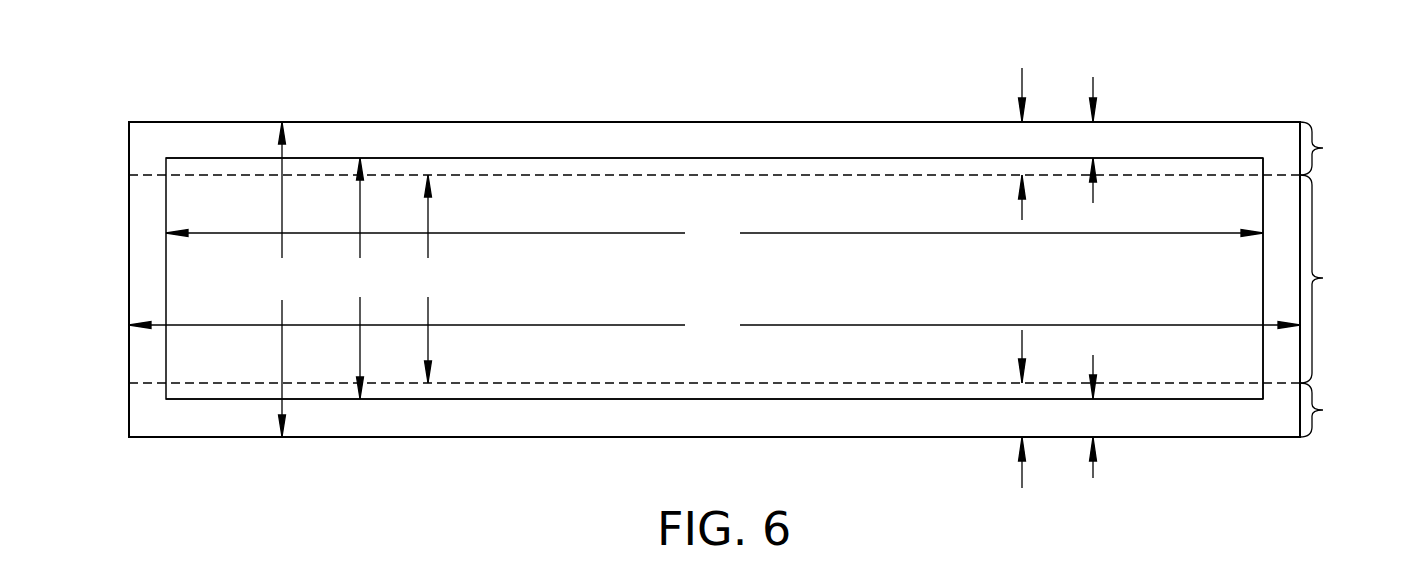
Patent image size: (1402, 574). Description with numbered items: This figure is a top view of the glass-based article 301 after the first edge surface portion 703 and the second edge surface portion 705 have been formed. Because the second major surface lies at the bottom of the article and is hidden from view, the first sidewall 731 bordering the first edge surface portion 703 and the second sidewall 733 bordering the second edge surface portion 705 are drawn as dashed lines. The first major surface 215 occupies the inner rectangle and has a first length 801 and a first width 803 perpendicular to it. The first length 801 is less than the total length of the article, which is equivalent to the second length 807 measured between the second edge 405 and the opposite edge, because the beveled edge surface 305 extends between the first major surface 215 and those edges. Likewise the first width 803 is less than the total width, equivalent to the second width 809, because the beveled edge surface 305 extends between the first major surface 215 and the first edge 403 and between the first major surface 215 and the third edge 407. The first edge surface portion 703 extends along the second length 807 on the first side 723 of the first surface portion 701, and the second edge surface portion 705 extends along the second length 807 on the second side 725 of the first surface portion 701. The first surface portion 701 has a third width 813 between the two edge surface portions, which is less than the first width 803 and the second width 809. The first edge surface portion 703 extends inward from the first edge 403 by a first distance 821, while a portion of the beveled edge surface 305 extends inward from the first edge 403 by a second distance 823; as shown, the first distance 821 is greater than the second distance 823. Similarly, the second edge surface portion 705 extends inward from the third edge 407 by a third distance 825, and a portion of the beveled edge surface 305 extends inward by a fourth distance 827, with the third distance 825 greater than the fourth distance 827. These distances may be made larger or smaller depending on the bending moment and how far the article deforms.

The glass-based article 301 is at (1246, 65).
The beveled edge surface 305 is at (677, 125).
The first major surface 215 is at (567, 180).
The first edge 403 is at (432, 437).
The second edge 405 is at (129, 138).
The third edge 407 is at (433, 121).
The first surface portion 701 is at (1336, 279).
The first edge surface portion 703 is at (1336, 410).
The second edge surface portion 705 is at (1337, 148).
The first side 723 is at (886, 412).
The second side 725 is at (886, 143).
The first sidewall 731 is at (762, 383).
The second sidewall 733 is at (762, 175).
The first length 801 is at (714, 233).
The first width 803 is at (360, 278).
The second length 807 is at (714, 326).
The second width 809 is at (282, 279).
The third width 813 is at (427, 279).
The first distance 821 is at (1022, 414).
The second distance 823 is at (1095, 417).
The third distance 825 is at (1022, 141).
The fourth distance 827 is at (1095, 142).